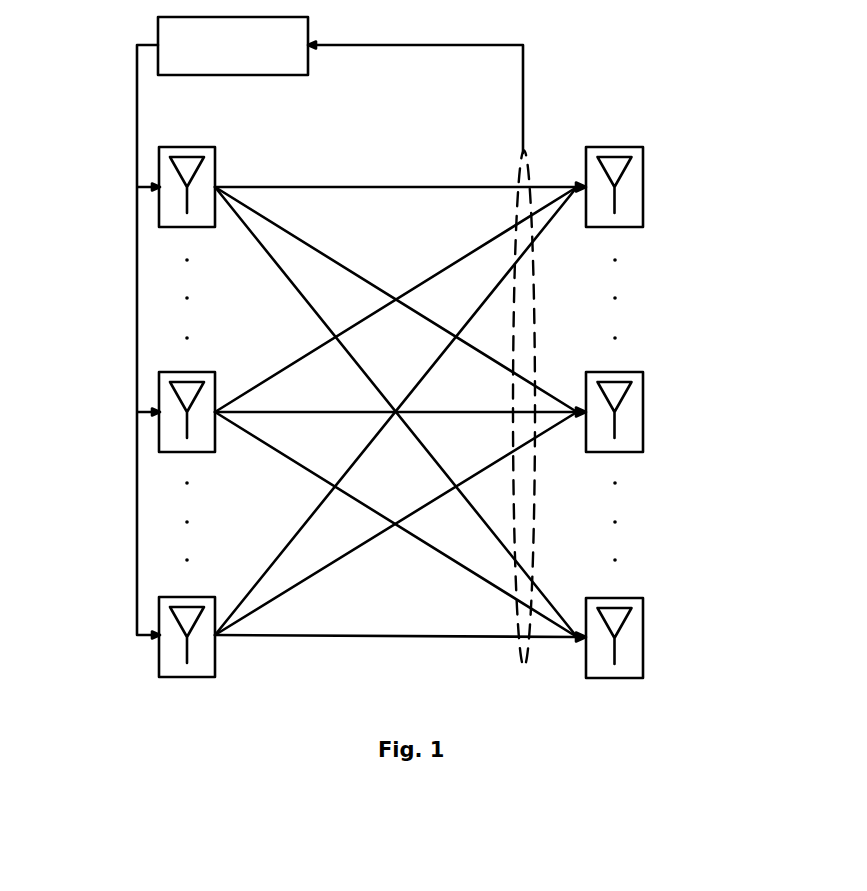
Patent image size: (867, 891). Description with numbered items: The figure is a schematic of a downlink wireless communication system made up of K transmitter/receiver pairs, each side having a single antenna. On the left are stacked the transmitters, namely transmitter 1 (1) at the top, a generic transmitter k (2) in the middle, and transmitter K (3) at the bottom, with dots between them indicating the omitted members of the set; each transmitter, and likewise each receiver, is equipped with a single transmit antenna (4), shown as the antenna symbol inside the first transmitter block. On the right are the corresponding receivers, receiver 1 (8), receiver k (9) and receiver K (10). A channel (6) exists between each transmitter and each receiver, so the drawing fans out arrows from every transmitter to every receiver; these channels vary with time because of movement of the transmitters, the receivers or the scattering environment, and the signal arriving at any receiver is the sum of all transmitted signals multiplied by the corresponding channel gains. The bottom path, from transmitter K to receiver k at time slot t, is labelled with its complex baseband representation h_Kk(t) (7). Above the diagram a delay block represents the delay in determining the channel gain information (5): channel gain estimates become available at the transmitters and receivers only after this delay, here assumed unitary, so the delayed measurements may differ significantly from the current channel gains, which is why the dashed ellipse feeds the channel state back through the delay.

The transmitter 1 is at (167, 147).
The transmitter k 2 is at (167, 372).
The transmitter K 3 is at (167, 597).
The transmit antenna 4 is at (189, 156).
The delay in determining channel gain information 5 is at (290, 75).
The channel 6 is at (358, 553).
The channel representation h_Kk(t) 7 is at (357, 627).
The receiver 1 8 is at (630, 147).
The receiver k 9 is at (630, 372).
The receiver K 10 is at (632, 598).